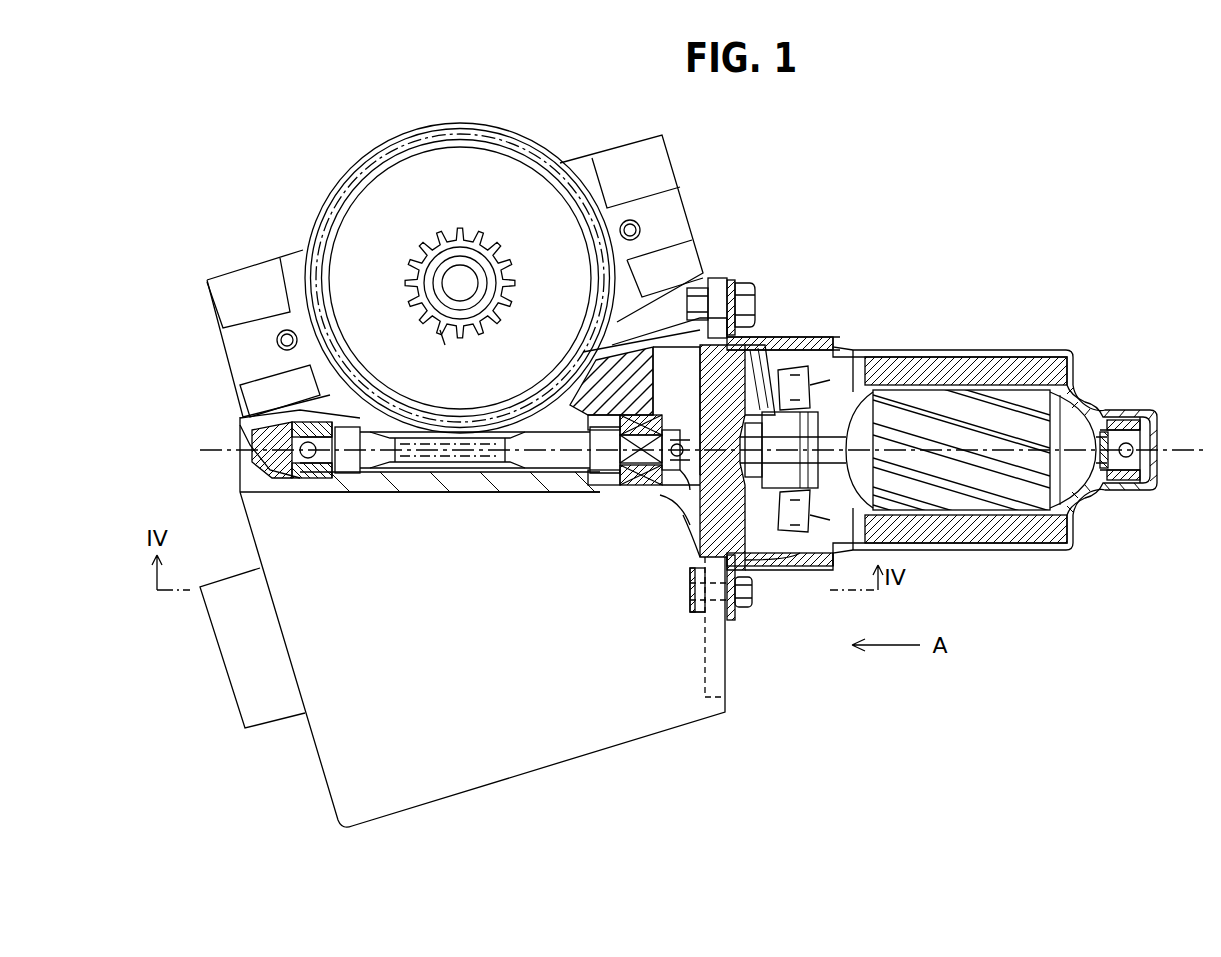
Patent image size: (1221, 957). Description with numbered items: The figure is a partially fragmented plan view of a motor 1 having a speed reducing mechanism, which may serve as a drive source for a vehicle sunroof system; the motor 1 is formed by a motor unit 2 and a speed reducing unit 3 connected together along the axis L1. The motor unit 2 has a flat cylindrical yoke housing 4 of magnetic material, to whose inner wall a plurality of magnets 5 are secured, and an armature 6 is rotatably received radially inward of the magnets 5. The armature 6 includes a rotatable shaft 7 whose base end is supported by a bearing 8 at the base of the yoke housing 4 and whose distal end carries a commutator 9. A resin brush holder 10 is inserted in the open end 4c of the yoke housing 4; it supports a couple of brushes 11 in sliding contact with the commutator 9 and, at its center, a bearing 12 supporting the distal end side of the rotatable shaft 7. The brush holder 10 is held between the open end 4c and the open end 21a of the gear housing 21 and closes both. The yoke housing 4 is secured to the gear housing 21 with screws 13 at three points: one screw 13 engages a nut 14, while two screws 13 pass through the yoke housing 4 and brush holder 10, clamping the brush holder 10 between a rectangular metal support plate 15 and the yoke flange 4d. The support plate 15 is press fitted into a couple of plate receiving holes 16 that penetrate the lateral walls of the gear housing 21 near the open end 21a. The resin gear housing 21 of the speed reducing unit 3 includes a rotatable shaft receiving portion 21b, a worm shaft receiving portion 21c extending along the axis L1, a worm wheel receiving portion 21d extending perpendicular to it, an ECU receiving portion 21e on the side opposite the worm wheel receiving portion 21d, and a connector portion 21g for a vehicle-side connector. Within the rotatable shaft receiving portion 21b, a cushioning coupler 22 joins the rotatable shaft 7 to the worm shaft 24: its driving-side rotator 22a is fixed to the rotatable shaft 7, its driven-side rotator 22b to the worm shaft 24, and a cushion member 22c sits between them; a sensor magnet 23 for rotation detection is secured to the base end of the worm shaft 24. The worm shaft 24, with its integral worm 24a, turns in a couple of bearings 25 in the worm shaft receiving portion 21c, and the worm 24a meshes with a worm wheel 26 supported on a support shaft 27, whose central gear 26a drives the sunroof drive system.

The motor 1 is at (1128, 206).
The motor unit 2 is at (1045, 338).
The speed reducing unit 3 is at (557, 143).
The yoke housing 4 is at (928, 350).
The open end 4c is at (770, 343).
The yoke flange 4d is at (737, 612).
The magnets 5 is at (985, 357).
The armature 6 is at (1085, 400).
The rotatable shaft 7 is at (746, 415).
The bearing 8 is at (1128, 417).
The commutator 9 is at (812, 431).
The brush holder 10 is at (780, 548).
The brushes 11 is at (805, 382).
The bearing 12 is at (723, 457).
The screws 13 is at (742, 290).
The nut 14 is at (706, 275).
The support plate 15 is at (688, 605).
The plate receiving holes 16 is at (695, 620).
The gear housing 21 is at (240, 517).
The open end 21a is at (770, 332).
The rotatable shaft receiving portion 21b is at (580, 355).
The worm shaft receiving portion 21c is at (425, 488).
The worm wheel receiving portion 21d is at (315, 398).
The ECU receiving portion 21e is at (683, 530).
The connector portion 21g is at (275, 725).
The cushioning coupler 22 is at (660, 411).
The driving-side rotator 22a is at (686, 499).
The driven-side rotator 22b is at (680, 470).
The cushion member 22c is at (679, 438).
The sensor magnet 23 is at (628, 486).
The worm shaft 24 is at (545, 492).
The worm 24a is at (477, 462).
The bearings 25 is at (318, 490).
The worm wheel 26 is at (370, 212).
The gear 26a is at (445, 345).
The support shaft 27 is at (462, 270).
The axis L1 is at (1183, 440).